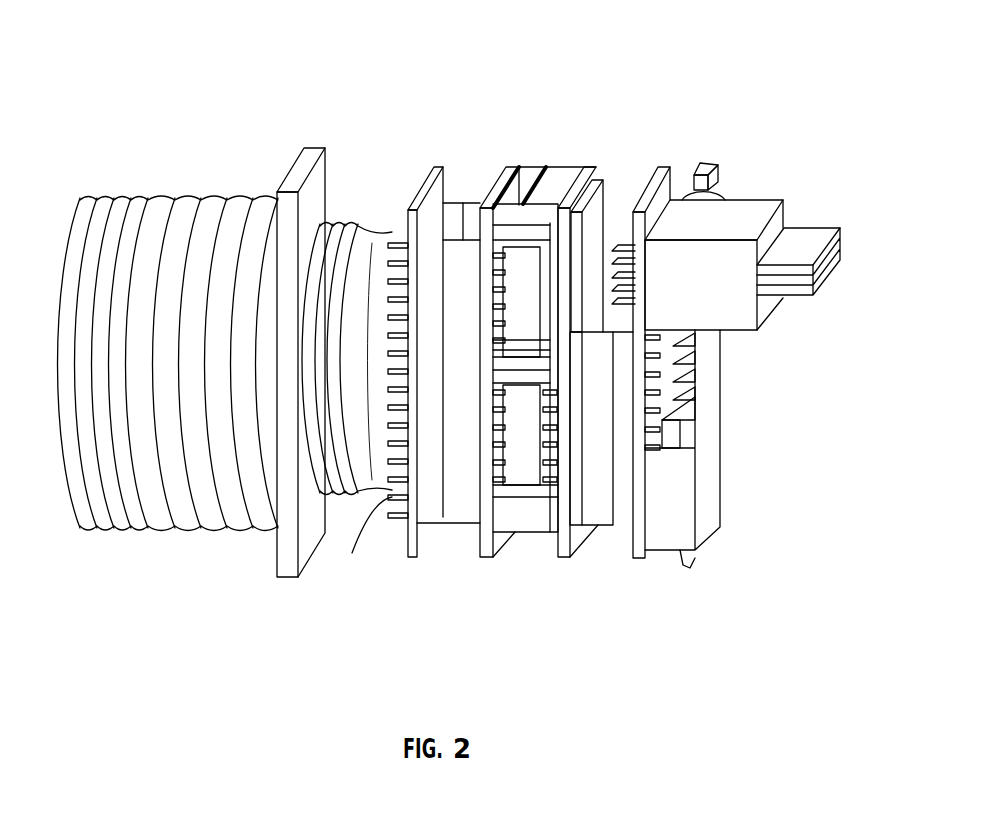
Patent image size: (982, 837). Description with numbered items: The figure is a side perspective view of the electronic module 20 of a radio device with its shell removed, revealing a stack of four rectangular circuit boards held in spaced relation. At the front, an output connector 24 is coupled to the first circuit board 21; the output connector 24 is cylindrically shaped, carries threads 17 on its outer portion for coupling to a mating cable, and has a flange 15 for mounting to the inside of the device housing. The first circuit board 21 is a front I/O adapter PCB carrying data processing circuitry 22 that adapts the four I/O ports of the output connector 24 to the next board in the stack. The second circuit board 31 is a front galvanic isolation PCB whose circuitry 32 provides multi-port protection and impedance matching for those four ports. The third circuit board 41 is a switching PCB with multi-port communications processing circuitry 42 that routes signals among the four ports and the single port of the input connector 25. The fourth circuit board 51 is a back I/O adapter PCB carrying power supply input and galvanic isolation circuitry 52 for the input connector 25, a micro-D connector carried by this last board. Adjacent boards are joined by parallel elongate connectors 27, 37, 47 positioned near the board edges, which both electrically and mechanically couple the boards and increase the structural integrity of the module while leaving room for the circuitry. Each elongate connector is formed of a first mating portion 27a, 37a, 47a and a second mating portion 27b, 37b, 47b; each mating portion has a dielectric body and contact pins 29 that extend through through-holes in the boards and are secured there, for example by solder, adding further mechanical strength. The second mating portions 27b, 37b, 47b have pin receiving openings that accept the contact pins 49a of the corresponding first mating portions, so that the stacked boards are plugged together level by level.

The flange 15 is at (293, 167).
The threads 17 is at (84, 200).
The electronic module 20 is at (342, 92).
The first circuit board 21 is at (440, 166).
The data processing circuitry 22 is at (412, 402).
The output connector 24 is at (152, 544).
The input connector 25 is at (750, 332).
The first elongate connector 27 is at (445, 540).
The first mating portion 27a is at (428, 512).
The second mating portion 27b is at (460, 508).
The contact pins 29 is at (387, 513).
The second circuit board 31 is at (485, 560).
The data processing circuitry 32 is at (515, 450).
The elongate connector 37 is at (544, 163).
The first mating portion 37a is at (523, 183).
The second mating portion 37b is at (558, 185).
The third circuit board 41 is at (565, 560).
The multi-port communications processing circuitry 42 is at (605, 205).
The elongate connector 47 is at (612, 532).
The first mating portion 47a is at (623, 320).
The second mating portion 47b is at (607, 323).
The contact pins 49a is at (552, 487).
The fourth circuit board 51 is at (663, 170).
The power supply input and galvanic isolation circuitry 52 is at (690, 412).